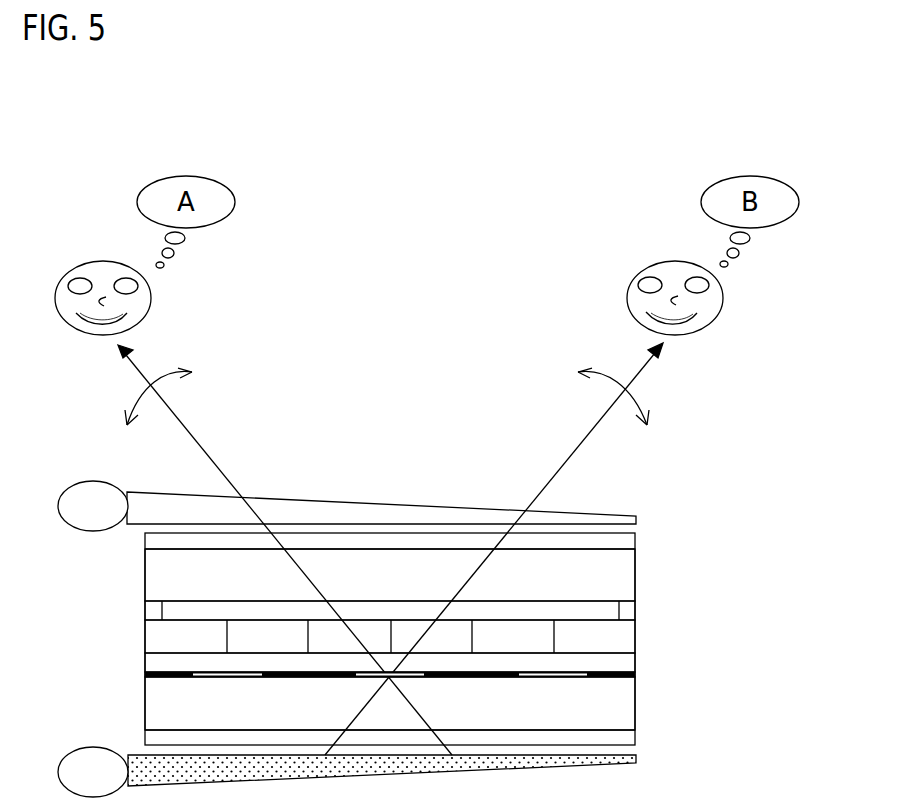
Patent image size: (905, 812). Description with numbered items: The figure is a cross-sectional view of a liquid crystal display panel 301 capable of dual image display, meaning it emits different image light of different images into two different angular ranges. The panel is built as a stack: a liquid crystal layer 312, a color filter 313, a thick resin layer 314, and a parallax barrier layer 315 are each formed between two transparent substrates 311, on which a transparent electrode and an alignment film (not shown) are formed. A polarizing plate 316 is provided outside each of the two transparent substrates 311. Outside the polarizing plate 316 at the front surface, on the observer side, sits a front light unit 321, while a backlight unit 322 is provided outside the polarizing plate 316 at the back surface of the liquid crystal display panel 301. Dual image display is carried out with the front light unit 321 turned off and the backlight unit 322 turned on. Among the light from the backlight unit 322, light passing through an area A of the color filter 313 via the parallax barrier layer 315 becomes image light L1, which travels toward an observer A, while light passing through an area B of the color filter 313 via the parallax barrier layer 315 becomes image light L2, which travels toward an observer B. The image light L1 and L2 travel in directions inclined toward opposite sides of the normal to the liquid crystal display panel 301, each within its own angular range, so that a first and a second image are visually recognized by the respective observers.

The liquid crystal display panel 301 is at (492, 636).
The transparent substrate 311 is at (625, 576).
The liquid crystal layer 312 is at (625, 611).
The color filter 313 is at (625, 639).
The thick resin layer 314 is at (625, 664).
The parallax barrier layer 315 is at (622, 678).
The polarizing plate 316 is at (625, 542).
The front light unit 321 is at (617, 512).
The backlight unit 322 is at (621, 760).
The image light L1 is at (211, 459).
The image light L2 is at (567, 459).